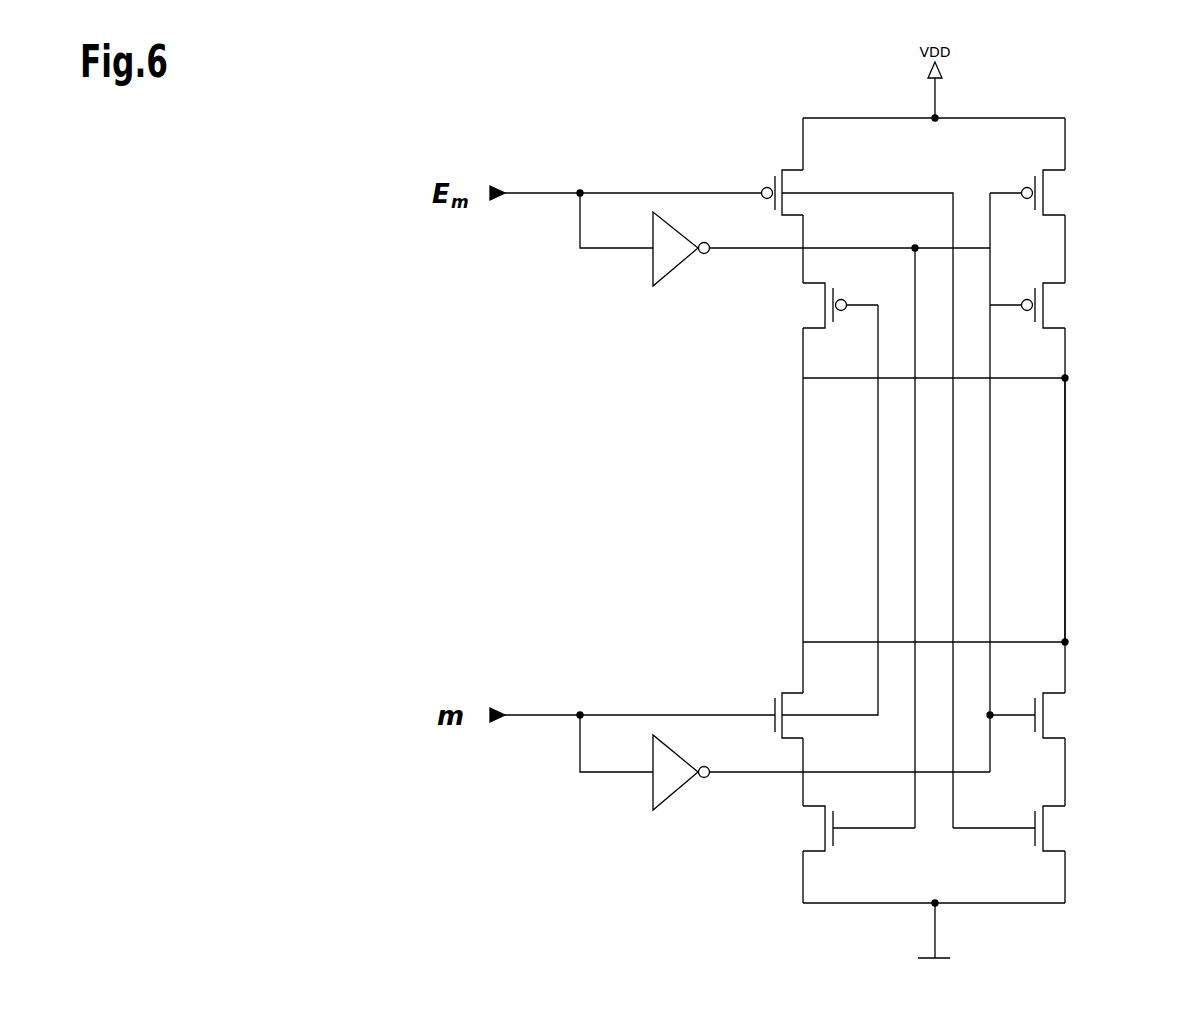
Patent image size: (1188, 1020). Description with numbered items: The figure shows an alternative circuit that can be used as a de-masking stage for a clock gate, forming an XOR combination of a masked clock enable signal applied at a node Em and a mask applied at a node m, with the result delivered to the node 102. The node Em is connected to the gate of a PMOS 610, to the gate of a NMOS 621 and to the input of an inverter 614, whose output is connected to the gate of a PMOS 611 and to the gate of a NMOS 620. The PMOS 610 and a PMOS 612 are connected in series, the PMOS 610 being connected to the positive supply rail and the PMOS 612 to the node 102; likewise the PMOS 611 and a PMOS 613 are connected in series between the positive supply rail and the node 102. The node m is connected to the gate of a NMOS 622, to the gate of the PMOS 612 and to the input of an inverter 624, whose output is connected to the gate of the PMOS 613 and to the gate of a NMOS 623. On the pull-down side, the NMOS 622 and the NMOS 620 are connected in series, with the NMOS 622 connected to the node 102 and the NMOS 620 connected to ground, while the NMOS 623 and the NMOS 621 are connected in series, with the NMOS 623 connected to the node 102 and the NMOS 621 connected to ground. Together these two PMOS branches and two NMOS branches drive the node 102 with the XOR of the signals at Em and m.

The node 102 is at (1065, 510).
The PMOS 610 is at (760, 183).
The PMOS 611 is at (1056, 192).
The PMOS 612 is at (816, 305).
The PMOS 613 is at (1056, 305).
The inverter 614 is at (654, 262).
The NMOS 620 is at (830, 828).
The NMOS 621 is at (1037, 828).
The NMOS 622 is at (765, 702).
The NMOS 623 is at (1056, 715).
The inverter 624 is at (658, 789).